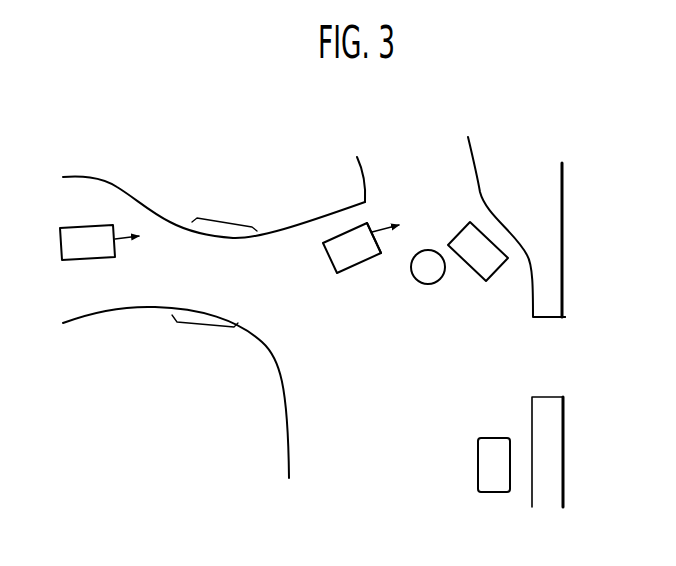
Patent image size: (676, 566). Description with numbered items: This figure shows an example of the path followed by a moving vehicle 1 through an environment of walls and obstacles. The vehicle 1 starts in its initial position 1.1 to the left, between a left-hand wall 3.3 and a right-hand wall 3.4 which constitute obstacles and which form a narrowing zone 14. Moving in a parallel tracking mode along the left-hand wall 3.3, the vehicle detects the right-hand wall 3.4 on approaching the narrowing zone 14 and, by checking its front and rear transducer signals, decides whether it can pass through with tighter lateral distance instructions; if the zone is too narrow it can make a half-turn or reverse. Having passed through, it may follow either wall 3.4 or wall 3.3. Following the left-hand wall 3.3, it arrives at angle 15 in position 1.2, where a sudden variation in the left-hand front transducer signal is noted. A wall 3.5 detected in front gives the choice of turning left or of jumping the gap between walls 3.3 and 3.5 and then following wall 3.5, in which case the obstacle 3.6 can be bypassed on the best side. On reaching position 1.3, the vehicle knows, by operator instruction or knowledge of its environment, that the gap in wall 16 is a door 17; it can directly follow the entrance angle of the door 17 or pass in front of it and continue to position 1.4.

The vehicle 1 is at (365, 226).
The initial position 1.1 is at (89, 224).
The position at angle 1.2 is at (331, 262).
The position near door 1.3 is at (476, 273).
The final position 1.4 is at (476, 478).
The left-hand wall 3.3 is at (94, 177).
The right-hand wall 3.4 is at (102, 317).
The wall 3.5 is at (480, 177).
The obstacle 3.6 is at (410, 272).
The narrowing zone 14 is at (230, 226).
The angle 15 is at (357, 200).
The wall 16 is at (550, 364).
The door 17 is at (548, 316).